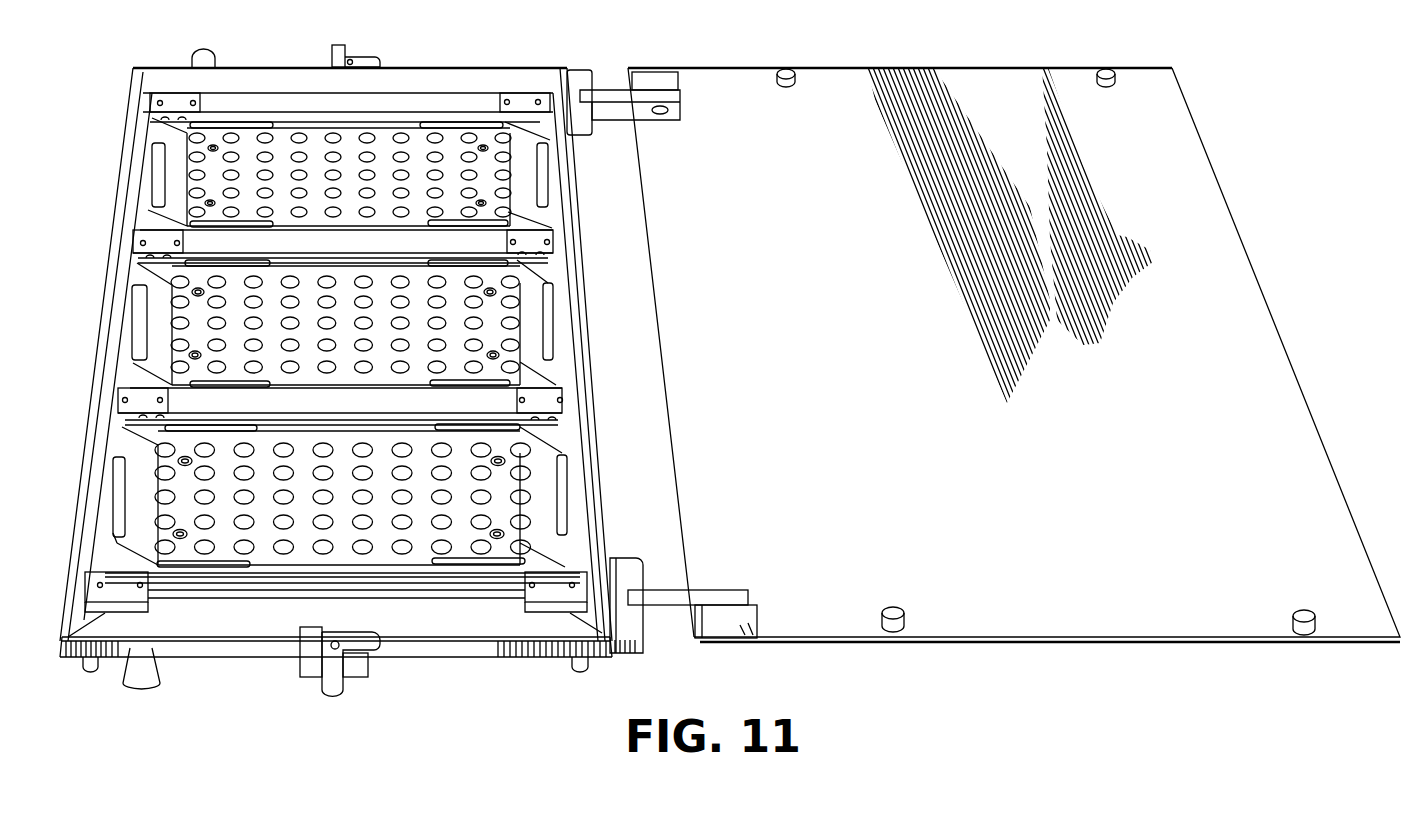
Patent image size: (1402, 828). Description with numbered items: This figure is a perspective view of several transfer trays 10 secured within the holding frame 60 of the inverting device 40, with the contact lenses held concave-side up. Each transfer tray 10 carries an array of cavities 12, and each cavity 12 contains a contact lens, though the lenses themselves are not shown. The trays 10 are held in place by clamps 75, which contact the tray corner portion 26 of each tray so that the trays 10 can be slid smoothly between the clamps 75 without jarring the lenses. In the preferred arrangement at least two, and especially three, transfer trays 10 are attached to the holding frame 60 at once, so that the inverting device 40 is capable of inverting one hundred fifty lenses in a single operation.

The transfer tray 10 is at (375, 525).
The cavity 12 is at (520, 472).
The tray corner portion 26 is at (127, 565).
The inverting device 40 is at (218, 648).
The holding frame 60 is at (465, 615).
The clamp 75 is at (550, 590).